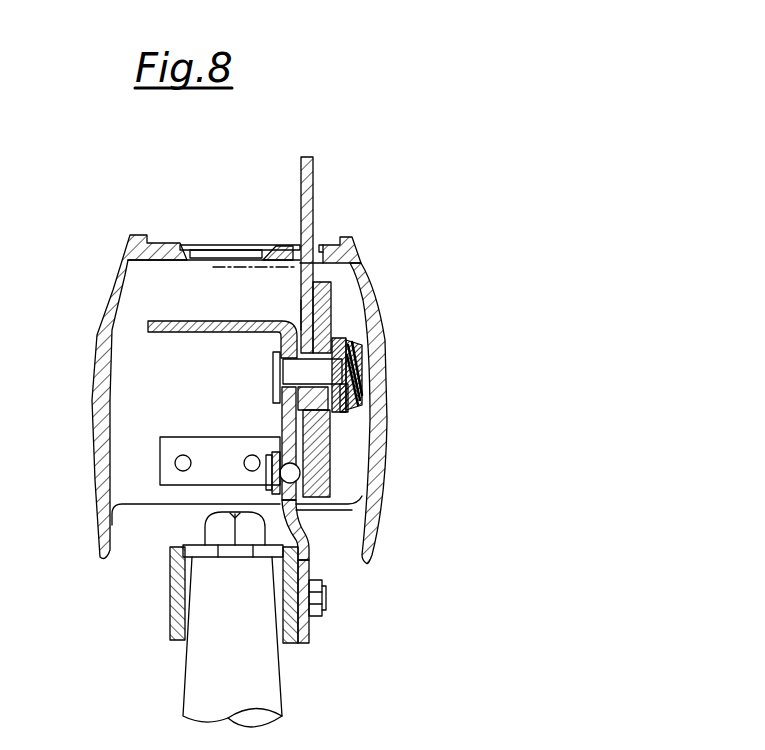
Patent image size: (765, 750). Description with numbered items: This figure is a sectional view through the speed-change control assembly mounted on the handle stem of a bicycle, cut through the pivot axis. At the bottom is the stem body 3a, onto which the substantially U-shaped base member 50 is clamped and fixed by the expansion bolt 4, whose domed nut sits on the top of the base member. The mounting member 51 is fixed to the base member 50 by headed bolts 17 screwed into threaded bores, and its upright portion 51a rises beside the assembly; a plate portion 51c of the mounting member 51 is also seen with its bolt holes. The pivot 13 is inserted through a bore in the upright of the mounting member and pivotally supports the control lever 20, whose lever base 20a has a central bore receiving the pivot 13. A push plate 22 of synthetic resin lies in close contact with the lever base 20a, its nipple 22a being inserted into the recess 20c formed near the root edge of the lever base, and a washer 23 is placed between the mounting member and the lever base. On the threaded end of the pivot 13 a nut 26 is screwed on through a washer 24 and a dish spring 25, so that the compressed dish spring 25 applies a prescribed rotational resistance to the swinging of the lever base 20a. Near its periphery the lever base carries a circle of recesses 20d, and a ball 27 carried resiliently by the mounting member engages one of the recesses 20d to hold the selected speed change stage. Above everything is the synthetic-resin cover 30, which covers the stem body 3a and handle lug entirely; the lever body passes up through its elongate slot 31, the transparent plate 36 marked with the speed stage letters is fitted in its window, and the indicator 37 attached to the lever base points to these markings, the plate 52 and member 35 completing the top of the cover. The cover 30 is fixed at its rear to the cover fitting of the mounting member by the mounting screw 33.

The stem body 3a is at (196, 665).
The expansion bolt 4 is at (200, 527).
The pivot 13 is at (372, 400).
The headed bolts 17 is at (322, 612).
The control lever 20 is at (317, 180).
The lever base 20a is at (312, 318).
The recess 20c is at (316, 446).
The recesses 20d is at (332, 502).
The push plate 22 is at (333, 292).
The nipple 22a is at (330, 470).
The washer 23 is at (332, 342).
The washer 24 is at (345, 352).
The dish spring 25 is at (345, 370).
The nut 26 is at (355, 382).
The ball 27 is at (305, 532).
The cover 30 is at (345, 240).
The elongate slot 31 is at (320, 245).
The mounting screw 33 is at (178, 463).
The guide member 35 is at (254, 256).
The transparent plate 36 is at (218, 243).
The indicator 37 is at (285, 243).
The base member 50 is at (172, 598).
The mounting member 51 is at (314, 560).
The bracket upper part 51a is at (300, 426).
The mounting plate 51c is at (165, 450).
The plate 52 is at (189, 330).